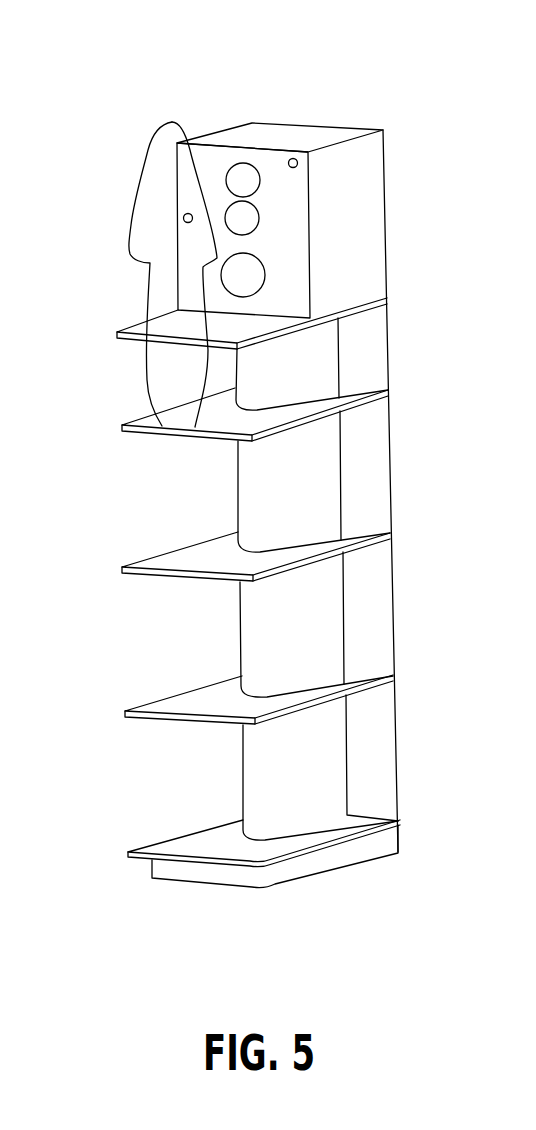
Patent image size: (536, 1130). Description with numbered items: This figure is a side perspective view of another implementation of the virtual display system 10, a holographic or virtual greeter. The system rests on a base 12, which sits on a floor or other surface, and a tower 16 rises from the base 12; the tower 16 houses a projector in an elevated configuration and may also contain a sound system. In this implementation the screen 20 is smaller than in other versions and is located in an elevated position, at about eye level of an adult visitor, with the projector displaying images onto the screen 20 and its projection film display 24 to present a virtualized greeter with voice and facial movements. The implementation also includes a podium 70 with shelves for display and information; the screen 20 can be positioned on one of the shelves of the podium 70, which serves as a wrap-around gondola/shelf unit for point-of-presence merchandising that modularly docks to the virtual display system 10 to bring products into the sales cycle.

The virtual display system 10 is at (257, 474).
The base 12 is at (145, 868).
The tower 16 is at (392, 450).
The screen 20 is at (135, 274).
The projection film display 24 is at (128, 244).
The podium 70 is at (150, 718).